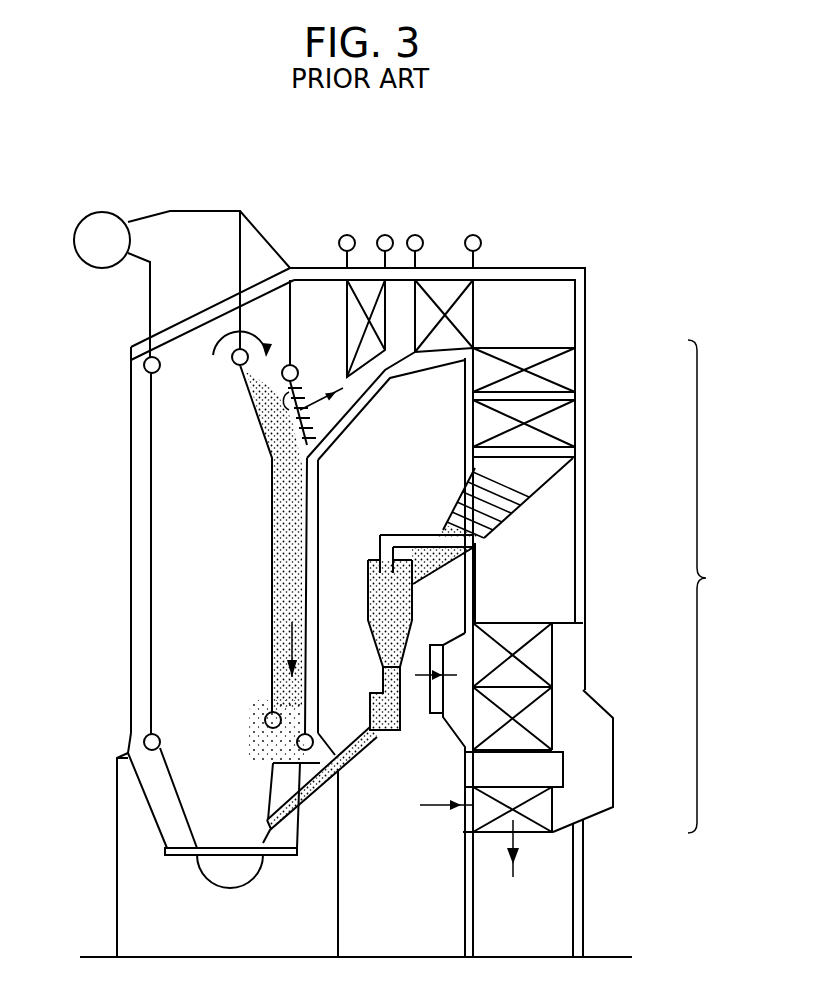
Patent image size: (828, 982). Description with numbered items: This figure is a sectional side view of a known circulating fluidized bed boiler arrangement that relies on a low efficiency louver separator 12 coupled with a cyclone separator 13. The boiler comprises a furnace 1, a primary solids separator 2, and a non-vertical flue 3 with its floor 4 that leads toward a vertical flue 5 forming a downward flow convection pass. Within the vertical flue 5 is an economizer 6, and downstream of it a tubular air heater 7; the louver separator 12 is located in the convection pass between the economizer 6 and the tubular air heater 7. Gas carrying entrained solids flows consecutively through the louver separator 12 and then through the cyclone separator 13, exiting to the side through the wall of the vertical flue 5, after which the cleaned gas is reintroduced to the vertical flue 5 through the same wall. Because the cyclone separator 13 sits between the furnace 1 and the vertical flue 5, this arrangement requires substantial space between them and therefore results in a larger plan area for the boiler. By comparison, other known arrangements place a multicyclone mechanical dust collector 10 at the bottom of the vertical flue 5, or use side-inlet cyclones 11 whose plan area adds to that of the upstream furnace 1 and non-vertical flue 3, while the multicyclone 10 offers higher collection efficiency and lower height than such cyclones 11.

The furnace 1 is at (183, 552).
The primary solids separator 2 is at (267, 432).
The non-vertical flue 3 is at (400, 315).
The floor 4 is at (372, 398).
The vertical flue 5 is at (712, 586).
The economizer 6 is at (557, 420).
The tubular air heater 7 is at (607, 728).
The multicyclone mechanical dust collector 10 is at (226, 866).
The cyclones 11 is at (277, 593).
The louver separator 12 is at (557, 466).
The cyclone separator 13 is at (363, 573).